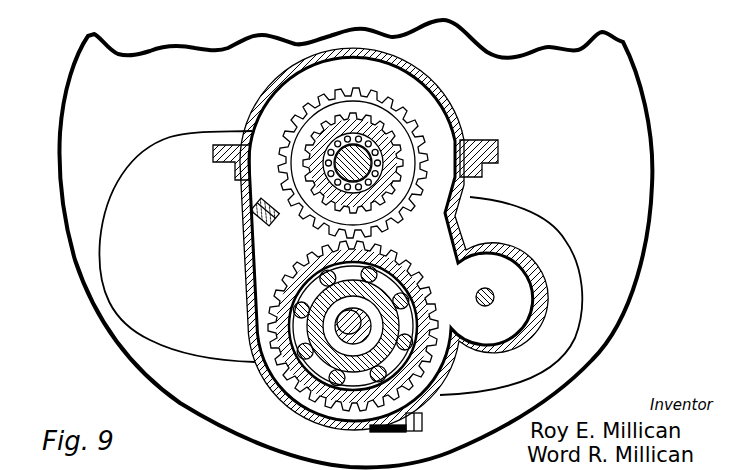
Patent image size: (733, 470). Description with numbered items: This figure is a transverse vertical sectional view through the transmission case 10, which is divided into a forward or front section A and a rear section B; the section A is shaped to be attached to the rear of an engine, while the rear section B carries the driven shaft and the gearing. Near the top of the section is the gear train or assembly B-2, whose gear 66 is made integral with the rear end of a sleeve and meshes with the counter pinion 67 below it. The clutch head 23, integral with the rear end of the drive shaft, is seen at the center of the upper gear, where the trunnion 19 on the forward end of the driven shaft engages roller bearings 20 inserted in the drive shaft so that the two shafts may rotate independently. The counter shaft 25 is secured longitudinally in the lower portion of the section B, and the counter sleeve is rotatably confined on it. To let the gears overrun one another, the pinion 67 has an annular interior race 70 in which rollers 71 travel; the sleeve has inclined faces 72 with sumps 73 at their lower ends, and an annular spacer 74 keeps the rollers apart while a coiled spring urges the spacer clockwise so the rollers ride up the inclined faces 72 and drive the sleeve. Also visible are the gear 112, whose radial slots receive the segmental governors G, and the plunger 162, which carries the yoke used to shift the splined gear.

The case 10 is at (620, 207).
The front section A is at (70, 127).
The rear section B is at (270, 84).
The gear train or assembly B-2 is at (400, 112).
The gear 66 is at (255, 131).
The gear 112 is at (242, 185).
The governors G is at (262, 222).
The clutch head 23 is at (383, 88).
The rollers 71 is at (418, 262).
The trunnion 19 is at (368, 149).
The roller bearings 20 is at (420, 182).
The sumps 73 is at (295, 282).
The annular interior race 70 is at (425, 293).
The annular spacer 74 is at (425, 352).
The inclined faces 72 is at (270, 380).
The counter shaft 25 is at (340, 420).
The plunger 162 is at (500, 285).
The counter pinion 67 is at (350, 430).